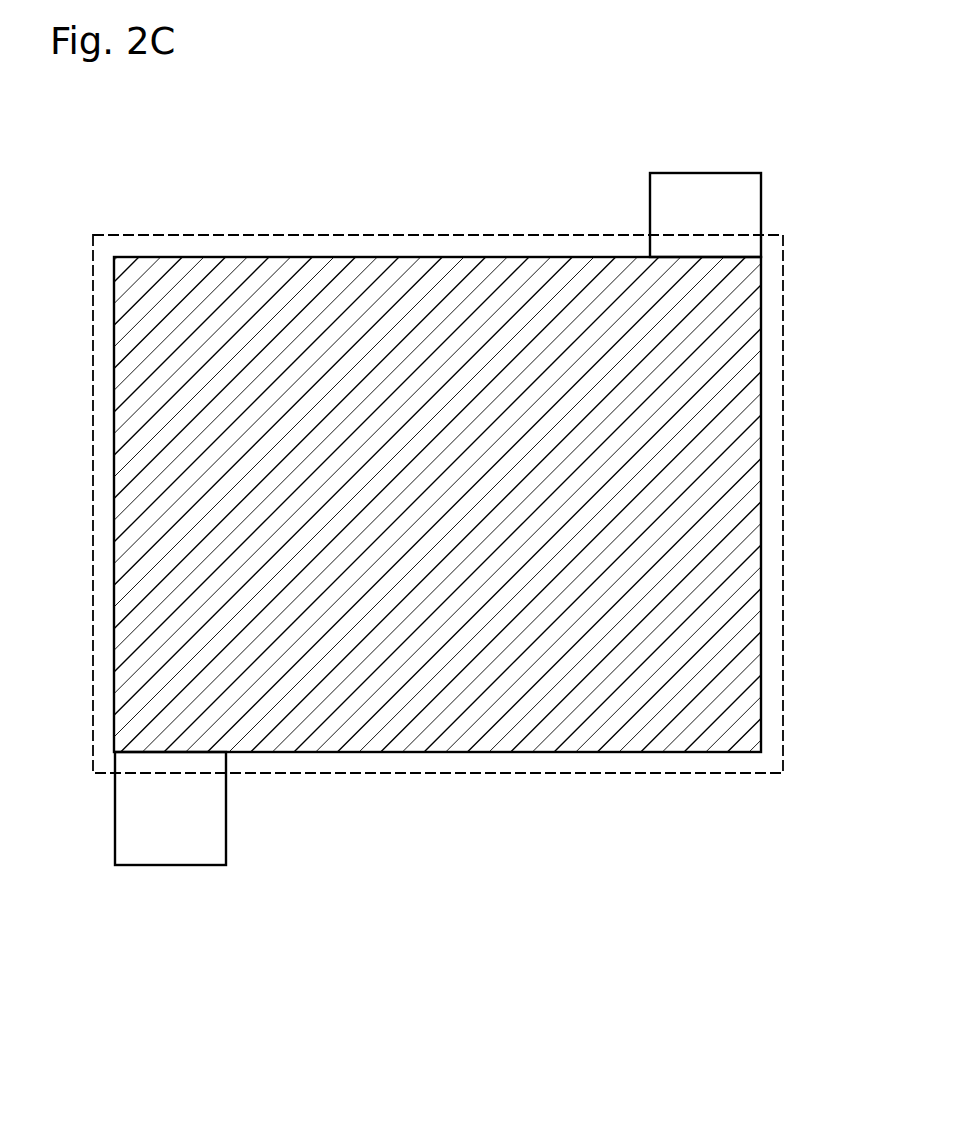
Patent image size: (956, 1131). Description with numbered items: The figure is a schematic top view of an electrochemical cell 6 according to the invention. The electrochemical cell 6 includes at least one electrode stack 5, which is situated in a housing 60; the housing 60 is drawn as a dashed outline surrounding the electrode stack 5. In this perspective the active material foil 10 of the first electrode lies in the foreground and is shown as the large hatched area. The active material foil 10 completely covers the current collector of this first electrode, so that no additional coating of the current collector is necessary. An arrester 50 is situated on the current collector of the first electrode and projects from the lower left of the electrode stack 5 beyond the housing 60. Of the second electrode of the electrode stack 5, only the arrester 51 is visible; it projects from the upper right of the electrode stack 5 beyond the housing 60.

The electrochemical cell 6 is at (70, 184).
The electrode stack 5 is at (113, 440).
The active material foil 10 is at (420, 268).
The arrester 50 is at (170, 866).
The arrester 51 is at (702, 172).
The housing 60 is at (783, 393).